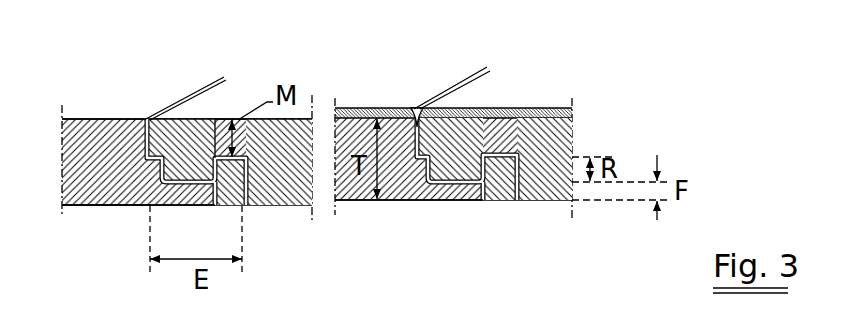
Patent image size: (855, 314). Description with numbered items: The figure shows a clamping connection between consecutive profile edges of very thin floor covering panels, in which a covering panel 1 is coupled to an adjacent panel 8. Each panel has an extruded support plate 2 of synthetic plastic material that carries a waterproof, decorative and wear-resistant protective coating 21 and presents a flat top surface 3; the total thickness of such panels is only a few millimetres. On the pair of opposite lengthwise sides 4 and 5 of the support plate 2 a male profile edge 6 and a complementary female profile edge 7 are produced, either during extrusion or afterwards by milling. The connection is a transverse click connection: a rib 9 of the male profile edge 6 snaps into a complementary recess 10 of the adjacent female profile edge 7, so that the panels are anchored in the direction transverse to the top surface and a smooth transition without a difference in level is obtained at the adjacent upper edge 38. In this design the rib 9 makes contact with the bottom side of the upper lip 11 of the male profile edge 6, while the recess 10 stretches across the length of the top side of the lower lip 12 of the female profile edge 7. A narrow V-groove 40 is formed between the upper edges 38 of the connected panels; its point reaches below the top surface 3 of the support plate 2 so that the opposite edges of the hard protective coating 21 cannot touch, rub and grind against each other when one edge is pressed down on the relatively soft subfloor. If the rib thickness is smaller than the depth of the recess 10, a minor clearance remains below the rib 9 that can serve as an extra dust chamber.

The covering panel 1 is at (352, 93).
The support plate 2 is at (91, 169).
The top surface 3 is at (223, 114).
The lengthwise side 4 is at (172, 102).
The lengthwise side 5 is at (514, 203).
The male profile edge 6 is at (203, 155).
The female profile edge 7 is at (230, 197).
The adjacent panel 8 is at (88, 208).
The rib 9 is at (182, 168).
The recess 10 is at (483, 201).
The upper lip 11 is at (202, 152).
The lower lip 12 is at (168, 195).
The protective coating 21 is at (533, 112).
The upper edge 38 is at (483, 73).
The V-groove 40 is at (415, 107).